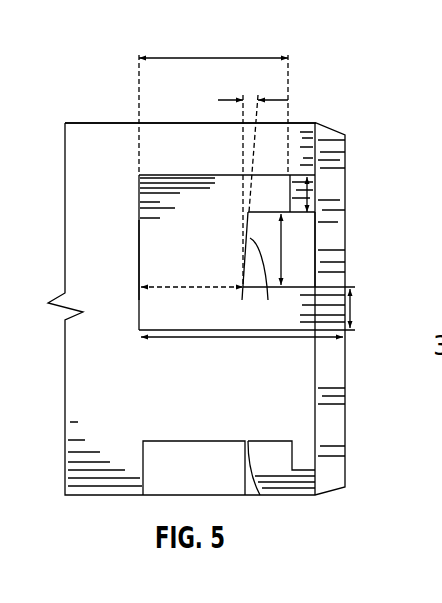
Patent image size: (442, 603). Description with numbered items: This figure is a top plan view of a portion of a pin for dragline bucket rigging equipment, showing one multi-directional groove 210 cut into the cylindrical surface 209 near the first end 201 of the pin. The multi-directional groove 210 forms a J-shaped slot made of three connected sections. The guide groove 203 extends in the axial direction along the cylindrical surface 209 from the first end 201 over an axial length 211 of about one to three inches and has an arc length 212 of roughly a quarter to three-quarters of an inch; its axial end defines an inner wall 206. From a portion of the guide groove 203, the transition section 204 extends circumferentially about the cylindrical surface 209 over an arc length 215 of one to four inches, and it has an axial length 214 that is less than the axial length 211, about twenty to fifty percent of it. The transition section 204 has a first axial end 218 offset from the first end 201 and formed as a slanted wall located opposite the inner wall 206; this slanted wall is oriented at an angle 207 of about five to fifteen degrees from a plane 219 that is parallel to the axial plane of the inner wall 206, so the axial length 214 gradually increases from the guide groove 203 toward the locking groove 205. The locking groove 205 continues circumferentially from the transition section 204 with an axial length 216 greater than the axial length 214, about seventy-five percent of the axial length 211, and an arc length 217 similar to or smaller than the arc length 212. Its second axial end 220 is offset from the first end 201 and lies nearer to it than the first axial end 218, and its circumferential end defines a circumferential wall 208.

The first end 201 is at (348, 139).
The guide groove 203 is at (320, 295).
The transition section 204 is at (150, 203).
The locking groove 205 is at (218, 187).
The inner wall 206 is at (140, 228).
The angle 207 is at (283, 99).
The circumferential wall 208 is at (240, 180).
The cylindrical surface 209 is at (121, 134).
The multi-directional groove 210 is at (310, 283).
The axial length 211 is at (242, 336).
The arc length 212 is at (357, 305).
The axial length 214 is at (210, 287).
The arc length 215 is at (283, 240).
The axial length 216 is at (215, 58).
The arc length 217 is at (313, 192).
The first axial end 218 is at (264, 270).
The plane 219 is at (243, 132).
The second axial end 220 is at (291, 176).